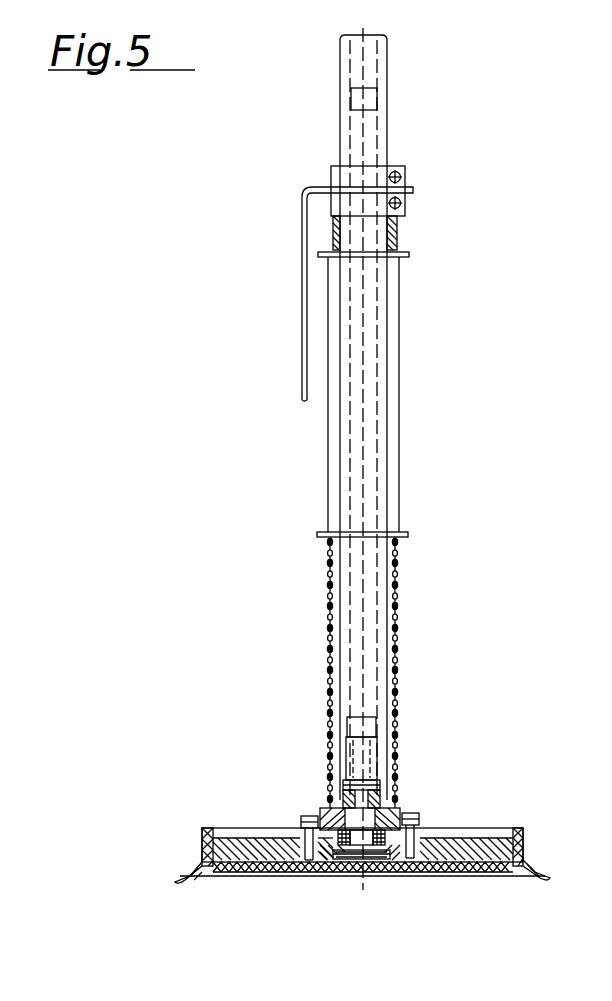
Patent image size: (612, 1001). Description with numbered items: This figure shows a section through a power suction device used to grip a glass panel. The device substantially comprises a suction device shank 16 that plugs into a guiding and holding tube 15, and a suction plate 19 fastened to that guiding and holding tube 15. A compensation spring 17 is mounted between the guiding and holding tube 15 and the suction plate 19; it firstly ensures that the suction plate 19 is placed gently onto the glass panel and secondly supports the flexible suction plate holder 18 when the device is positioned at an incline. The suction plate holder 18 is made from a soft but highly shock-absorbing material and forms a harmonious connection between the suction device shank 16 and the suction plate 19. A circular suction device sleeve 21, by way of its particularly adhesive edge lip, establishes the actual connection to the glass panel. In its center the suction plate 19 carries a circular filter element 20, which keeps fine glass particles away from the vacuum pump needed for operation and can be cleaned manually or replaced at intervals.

The guiding and holding tube 15 is at (328, 447).
The suction device shank 16 is at (380, 440).
The compensation spring 17 is at (397, 655).
The suction plate holder 18 is at (330, 810).
The suction plate 19 is at (477, 843).
The filter element 20 is at (342, 872).
The suction device sleeve 21 is at (467, 867).